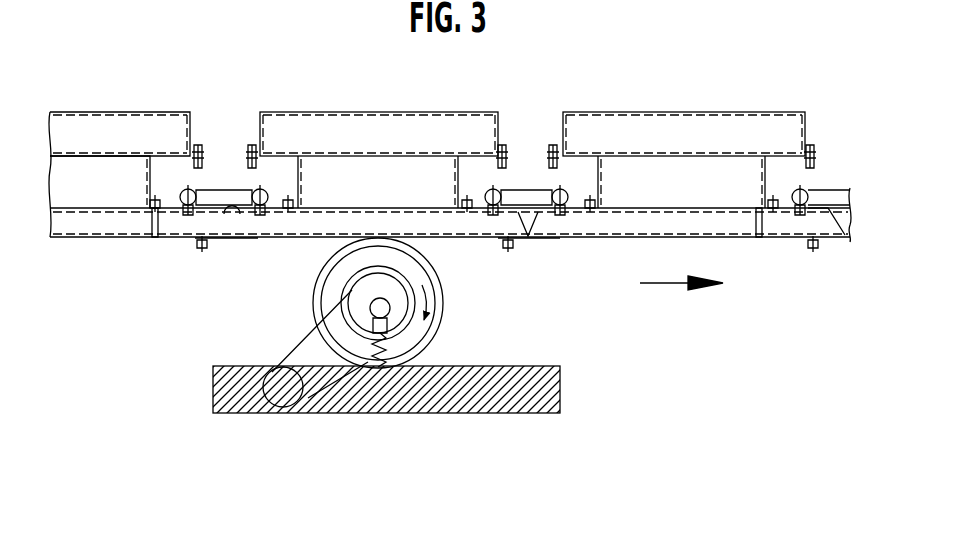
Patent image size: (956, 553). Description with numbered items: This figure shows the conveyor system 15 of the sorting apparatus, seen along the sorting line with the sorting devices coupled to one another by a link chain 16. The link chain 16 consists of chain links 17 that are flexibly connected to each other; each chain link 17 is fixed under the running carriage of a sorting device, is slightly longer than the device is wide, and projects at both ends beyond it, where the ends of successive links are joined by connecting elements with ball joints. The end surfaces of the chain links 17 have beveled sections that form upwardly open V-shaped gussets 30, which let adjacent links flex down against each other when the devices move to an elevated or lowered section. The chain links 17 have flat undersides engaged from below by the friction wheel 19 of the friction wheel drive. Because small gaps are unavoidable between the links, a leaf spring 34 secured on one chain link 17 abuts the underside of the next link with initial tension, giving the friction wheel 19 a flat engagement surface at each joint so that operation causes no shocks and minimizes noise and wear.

The conveyor system 15 is at (228, 323).
The link chain 16 is at (107, 238).
The chain links 17 is at (155, 233).
The friction wheel 19 is at (441, 321).
The gussets 30 is at (240, 214).
The leaf spring 34 is at (224, 214).